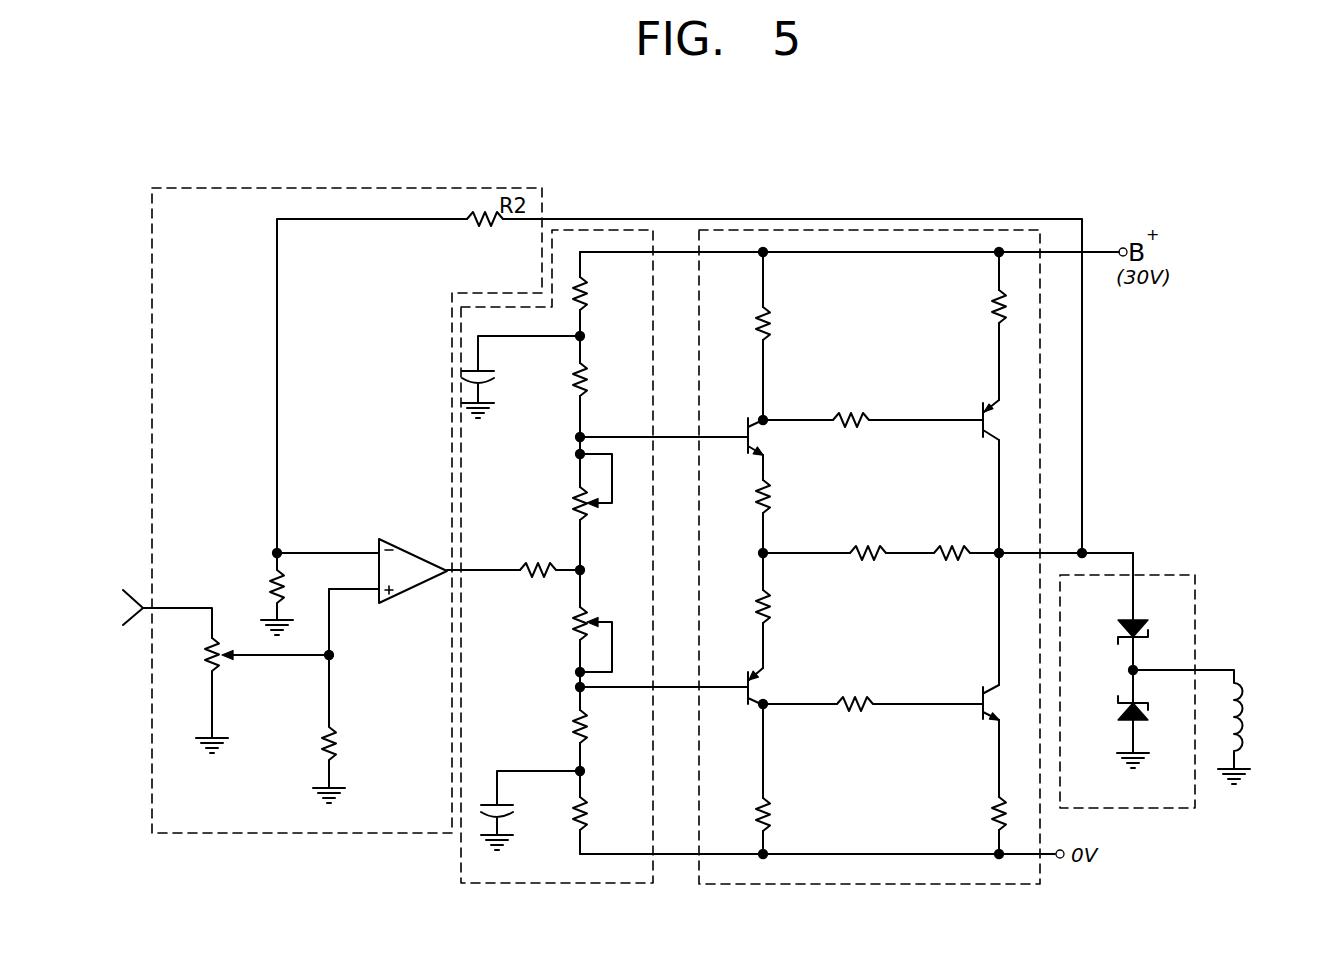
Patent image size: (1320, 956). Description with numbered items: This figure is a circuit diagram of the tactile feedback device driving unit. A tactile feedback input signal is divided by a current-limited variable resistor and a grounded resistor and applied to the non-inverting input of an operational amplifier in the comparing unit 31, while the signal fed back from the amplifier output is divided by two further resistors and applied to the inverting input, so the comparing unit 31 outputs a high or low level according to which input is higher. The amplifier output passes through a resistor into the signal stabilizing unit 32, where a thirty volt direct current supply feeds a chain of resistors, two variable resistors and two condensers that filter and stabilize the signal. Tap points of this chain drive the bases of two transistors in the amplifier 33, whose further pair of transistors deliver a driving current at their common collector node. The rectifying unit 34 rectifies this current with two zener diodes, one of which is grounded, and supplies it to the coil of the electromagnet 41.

The comparing unit 31 is at (217, 820).
The signal stabilizing unit 32 is at (567, 876).
The amplifier 33 is at (879, 876).
The rectifying unit 34 is at (1181, 800).
The electromagnet 41 is at (1246, 715).